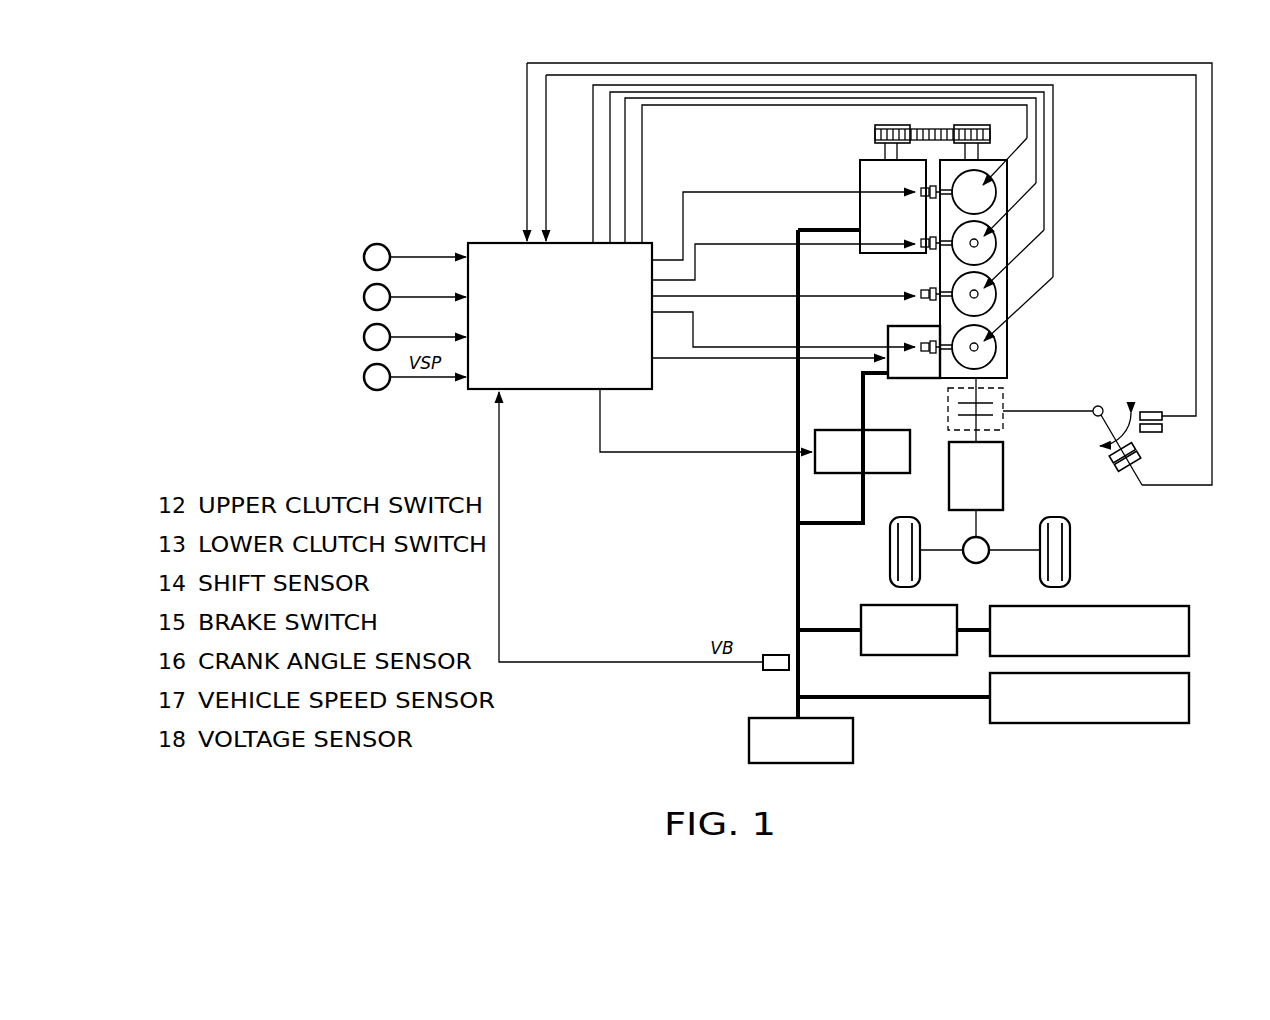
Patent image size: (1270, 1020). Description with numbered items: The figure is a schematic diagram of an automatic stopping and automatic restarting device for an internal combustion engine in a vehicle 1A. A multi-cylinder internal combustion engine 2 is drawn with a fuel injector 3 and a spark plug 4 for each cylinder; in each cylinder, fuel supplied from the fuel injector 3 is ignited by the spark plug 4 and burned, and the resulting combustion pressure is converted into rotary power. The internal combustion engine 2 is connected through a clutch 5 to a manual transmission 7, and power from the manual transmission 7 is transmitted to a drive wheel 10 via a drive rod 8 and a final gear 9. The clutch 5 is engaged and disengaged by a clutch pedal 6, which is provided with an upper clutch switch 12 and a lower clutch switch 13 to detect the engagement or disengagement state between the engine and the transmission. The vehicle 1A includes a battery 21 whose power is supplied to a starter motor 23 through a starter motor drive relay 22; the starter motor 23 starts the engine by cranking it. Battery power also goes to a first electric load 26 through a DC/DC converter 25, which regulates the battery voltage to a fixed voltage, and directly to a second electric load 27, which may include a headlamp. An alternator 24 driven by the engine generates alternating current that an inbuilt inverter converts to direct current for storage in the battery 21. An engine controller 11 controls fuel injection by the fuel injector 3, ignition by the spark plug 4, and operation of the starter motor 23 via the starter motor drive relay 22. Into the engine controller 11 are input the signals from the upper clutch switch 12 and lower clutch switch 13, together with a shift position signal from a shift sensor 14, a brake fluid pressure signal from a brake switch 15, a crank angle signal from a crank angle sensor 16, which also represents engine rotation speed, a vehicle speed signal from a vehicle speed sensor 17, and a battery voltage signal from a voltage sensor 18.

The vehicle 1A is at (1132, 522).
The internal combustion engine 2 is at (1008, 365).
The fuel injector 3 is at (933, 251).
The spark plug 4 is at (996, 190).
The clutch 5 is at (1003, 395).
The clutch pedal 6 is at (1108, 428).
The manual transmission 7 is at (1003, 456).
The drive rod 8 is at (978, 526).
The final gear 9 is at (988, 560).
The drive wheel 10 is at (1070, 549).
The engine controller 11 is at (500, 243).
The upper clutch switch 12 is at (1154, 432).
The lower clutch switch 13 is at (1118, 468).
The shift sensor 14 is at (364, 252).
The brake switch 15 is at (364, 292).
The crank angle sensor 16 is at (364, 332).
The vehicle speed sensor 17 is at (364, 372).
The voltage sensor 18 is at (776, 655).
The battery 21 is at (855, 740).
The starter motor drive relay 22 is at (867, 430).
The starter motor 23 is at (888, 338).
The alternator 24 is at (860, 180).
The DC/DC converter 25 is at (926, 605).
The first electric load 26 is at (1191, 624).
The second electric load 27 is at (1191, 686).